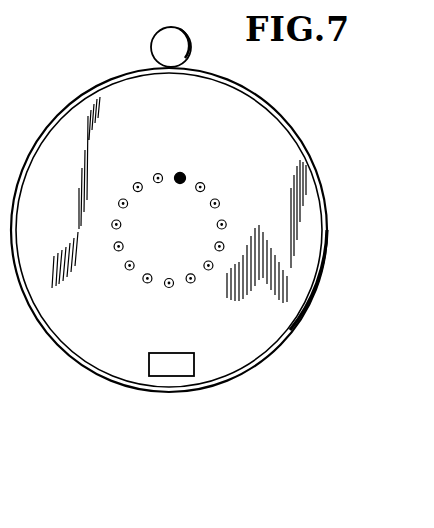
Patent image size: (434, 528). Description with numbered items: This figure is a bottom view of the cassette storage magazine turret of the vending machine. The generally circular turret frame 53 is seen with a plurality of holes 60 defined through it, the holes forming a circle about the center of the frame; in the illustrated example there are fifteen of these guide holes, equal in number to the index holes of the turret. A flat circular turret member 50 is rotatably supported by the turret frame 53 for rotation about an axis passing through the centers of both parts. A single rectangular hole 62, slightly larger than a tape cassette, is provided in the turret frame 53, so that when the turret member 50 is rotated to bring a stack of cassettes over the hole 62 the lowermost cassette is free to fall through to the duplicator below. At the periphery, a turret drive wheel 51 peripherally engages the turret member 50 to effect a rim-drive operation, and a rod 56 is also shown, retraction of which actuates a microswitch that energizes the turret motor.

The turret member 50 is at (309, 307).
The turret drive wheel 51 is at (153, 38).
The turret frame 53 is at (305, 238).
The rod 56 is at (181, 173).
The holes 60 is at (206, 186).
The rectangular hole 62 is at (163, 351).